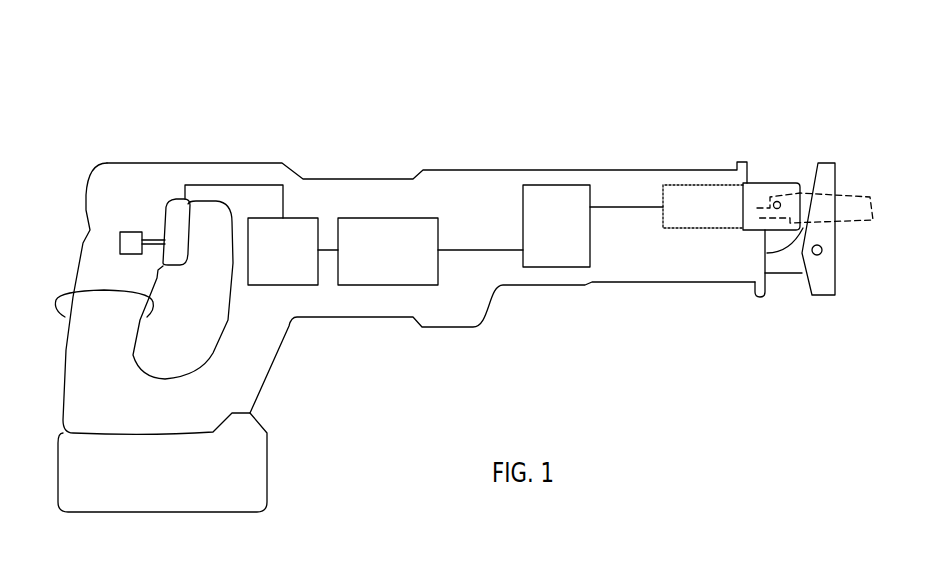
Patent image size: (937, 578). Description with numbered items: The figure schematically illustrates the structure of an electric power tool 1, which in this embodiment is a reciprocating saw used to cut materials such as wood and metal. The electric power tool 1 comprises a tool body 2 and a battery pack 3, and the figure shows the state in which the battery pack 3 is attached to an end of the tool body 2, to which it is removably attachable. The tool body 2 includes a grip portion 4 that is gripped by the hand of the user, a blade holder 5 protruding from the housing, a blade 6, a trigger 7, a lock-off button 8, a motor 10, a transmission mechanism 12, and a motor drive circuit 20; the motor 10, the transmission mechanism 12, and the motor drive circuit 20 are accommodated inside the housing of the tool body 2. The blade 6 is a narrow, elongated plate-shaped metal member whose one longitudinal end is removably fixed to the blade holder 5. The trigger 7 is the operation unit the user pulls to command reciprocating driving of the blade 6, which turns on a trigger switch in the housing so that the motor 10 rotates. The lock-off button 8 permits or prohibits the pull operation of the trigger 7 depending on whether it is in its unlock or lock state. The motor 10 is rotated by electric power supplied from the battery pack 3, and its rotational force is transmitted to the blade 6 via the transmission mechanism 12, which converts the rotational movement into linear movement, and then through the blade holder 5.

The electric power tool 1 is at (533, 68).
The tool body 2 is at (482, 300).
The battery pack 3 is at (252, 473).
The grip portion 4 is at (98, 288).
The blade holder 5 is at (772, 183).
The blade 6 is at (862, 231).
The trigger 7 is at (177, 217).
The lock-off button 8 is at (120, 234).
The motor 10 is at (430, 228).
The transmission mechanism 12 is at (553, 185).
The motor drive circuit 20 is at (303, 222).